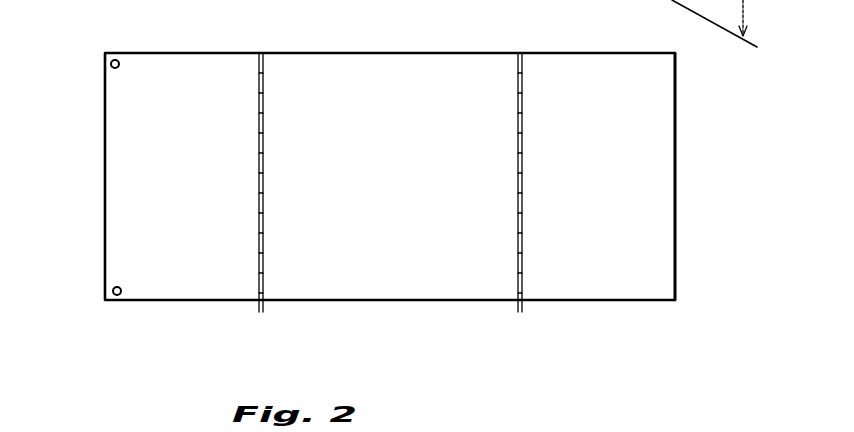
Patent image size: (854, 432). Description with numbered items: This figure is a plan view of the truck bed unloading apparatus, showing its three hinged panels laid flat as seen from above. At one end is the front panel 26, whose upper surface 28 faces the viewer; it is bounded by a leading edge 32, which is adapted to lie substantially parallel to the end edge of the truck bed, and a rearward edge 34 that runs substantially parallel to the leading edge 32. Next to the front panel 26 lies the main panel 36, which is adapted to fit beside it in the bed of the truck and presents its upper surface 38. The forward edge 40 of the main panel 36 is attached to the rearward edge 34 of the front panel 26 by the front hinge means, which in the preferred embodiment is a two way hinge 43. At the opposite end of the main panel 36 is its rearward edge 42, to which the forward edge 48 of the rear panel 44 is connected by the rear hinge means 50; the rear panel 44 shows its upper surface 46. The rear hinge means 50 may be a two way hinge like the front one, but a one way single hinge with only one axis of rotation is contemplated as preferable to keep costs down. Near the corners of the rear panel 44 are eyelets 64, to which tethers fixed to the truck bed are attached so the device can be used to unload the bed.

The front panel 26 is at (583, 80).
The upper surface 28 is at (601, 158).
The leading edge 32 is at (668, 169).
The rearward edge 34 is at (525, 250).
The main panel 36 is at (475, 92).
The upper surface 38 is at (388, 178).
The forward edge 40 is at (512, 254).
The rearward edge 42 is at (270, 245).
The two way hinge 43 is at (521, 305).
The rear panel 44 is at (214, 75).
The upper surface 46 is at (183, 179).
The forward edge 48 is at (256, 255).
The rear hinge means 50 is at (262, 307).
The eyelets 64 is at (110, 66).